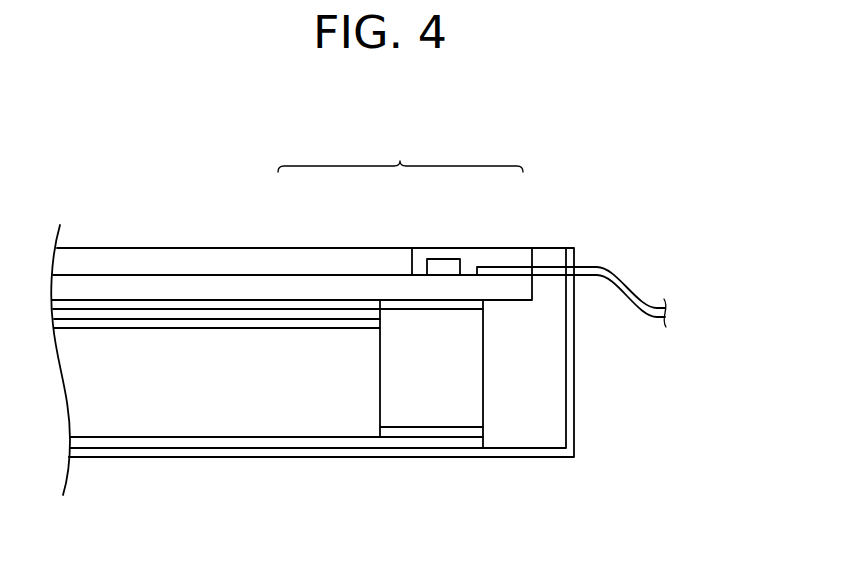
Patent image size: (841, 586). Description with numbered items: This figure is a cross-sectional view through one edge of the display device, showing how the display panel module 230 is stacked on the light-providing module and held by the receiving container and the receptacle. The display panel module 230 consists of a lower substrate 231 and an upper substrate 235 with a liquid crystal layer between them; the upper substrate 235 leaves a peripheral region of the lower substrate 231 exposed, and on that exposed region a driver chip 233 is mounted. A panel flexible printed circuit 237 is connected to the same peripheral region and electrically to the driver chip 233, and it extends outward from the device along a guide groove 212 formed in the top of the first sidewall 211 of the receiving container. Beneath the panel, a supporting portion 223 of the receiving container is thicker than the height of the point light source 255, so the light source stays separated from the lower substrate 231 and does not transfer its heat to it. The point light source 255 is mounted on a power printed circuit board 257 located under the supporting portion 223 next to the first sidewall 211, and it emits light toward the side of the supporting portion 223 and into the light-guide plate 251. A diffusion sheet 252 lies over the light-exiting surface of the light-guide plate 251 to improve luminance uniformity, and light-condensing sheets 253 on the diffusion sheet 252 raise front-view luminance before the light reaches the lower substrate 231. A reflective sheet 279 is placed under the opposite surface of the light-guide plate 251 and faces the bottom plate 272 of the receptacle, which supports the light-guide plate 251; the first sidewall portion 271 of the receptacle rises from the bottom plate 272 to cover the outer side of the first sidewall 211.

The first sidewall 211 is at (548, 358).
The guide groove 212 is at (548, 277).
The supporting portion 223 is at (508, 297).
The display panel module 230 is at (400, 153).
The lower substrate 231 is at (292, 285).
The driver chip 233 is at (443, 267).
The upper substrate 235 is at (352, 262).
The panel flexible printed circuit 237 is at (503, 270).
The light-guide plate 251 is at (110, 413).
The diffusion sheet 252 is at (108, 324).
The light-condensing sheets 253 is at (182, 313).
The point light source 255 is at (407, 412).
The power printed circuit board 257 is at (458, 435).
The first sidewall portion 271 is at (570, 398).
The bottom plate 272 is at (250, 453).
The reflective sheet 279 is at (183, 442).